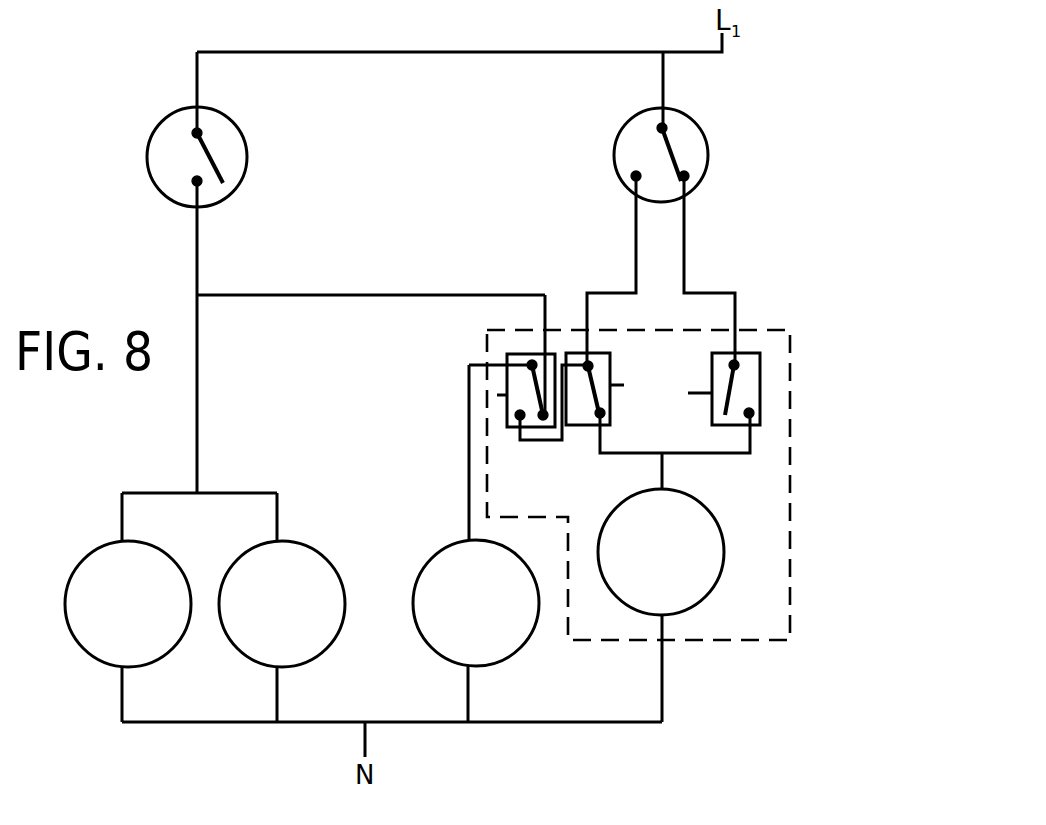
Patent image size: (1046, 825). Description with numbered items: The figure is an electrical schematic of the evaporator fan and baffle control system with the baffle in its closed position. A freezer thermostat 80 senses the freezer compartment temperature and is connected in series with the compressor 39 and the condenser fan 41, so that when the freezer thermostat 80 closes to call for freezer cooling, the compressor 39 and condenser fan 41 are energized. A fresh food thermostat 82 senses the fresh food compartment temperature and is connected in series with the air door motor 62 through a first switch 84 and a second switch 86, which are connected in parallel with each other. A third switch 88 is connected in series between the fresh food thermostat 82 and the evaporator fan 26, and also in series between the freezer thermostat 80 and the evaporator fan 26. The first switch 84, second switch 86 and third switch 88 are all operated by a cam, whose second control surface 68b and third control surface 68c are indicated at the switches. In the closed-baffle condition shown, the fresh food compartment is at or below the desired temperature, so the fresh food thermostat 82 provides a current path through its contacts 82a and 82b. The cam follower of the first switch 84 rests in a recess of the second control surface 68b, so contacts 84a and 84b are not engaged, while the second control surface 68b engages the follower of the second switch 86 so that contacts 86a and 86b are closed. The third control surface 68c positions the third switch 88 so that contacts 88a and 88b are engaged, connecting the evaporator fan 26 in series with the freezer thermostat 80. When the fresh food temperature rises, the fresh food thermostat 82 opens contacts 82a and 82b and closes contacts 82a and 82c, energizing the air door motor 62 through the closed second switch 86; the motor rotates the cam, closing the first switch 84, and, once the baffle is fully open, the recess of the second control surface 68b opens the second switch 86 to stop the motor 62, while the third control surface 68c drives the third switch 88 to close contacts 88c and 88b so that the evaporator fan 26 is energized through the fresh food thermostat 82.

The evaporator fan 26 is at (511, 657).
The compressor 39 is at (84, 556).
The condenser fan 41 is at (327, 553).
The air door motor 62 is at (718, 578).
The second control surface 68b is at (617, 385).
The third control surface 68c is at (507, 395).
The freezer thermostat 80 is at (235, 123).
The fresh food thermostat 82 is at (707, 176).
The fresh food thermostat contact 82a is at (658, 128).
The fresh food thermostat contact 82b is at (705, 163).
The fresh food thermostat contact 82c is at (624, 186).
The first switch 84 is at (762, 380).
The first switch contact 84a is at (734, 365).
The first switch contact 84b is at (750, 413).
The second switch 86 is at (612, 414).
The second switch contact 86a is at (588, 364).
The second switch contact 86b is at (600, 415).
The third switch 88 is at (506, 355).
The third switch contact 88a is at (543, 418).
The third switch contact 88b is at (532, 365).
The third switch contact 88c is at (520, 415).